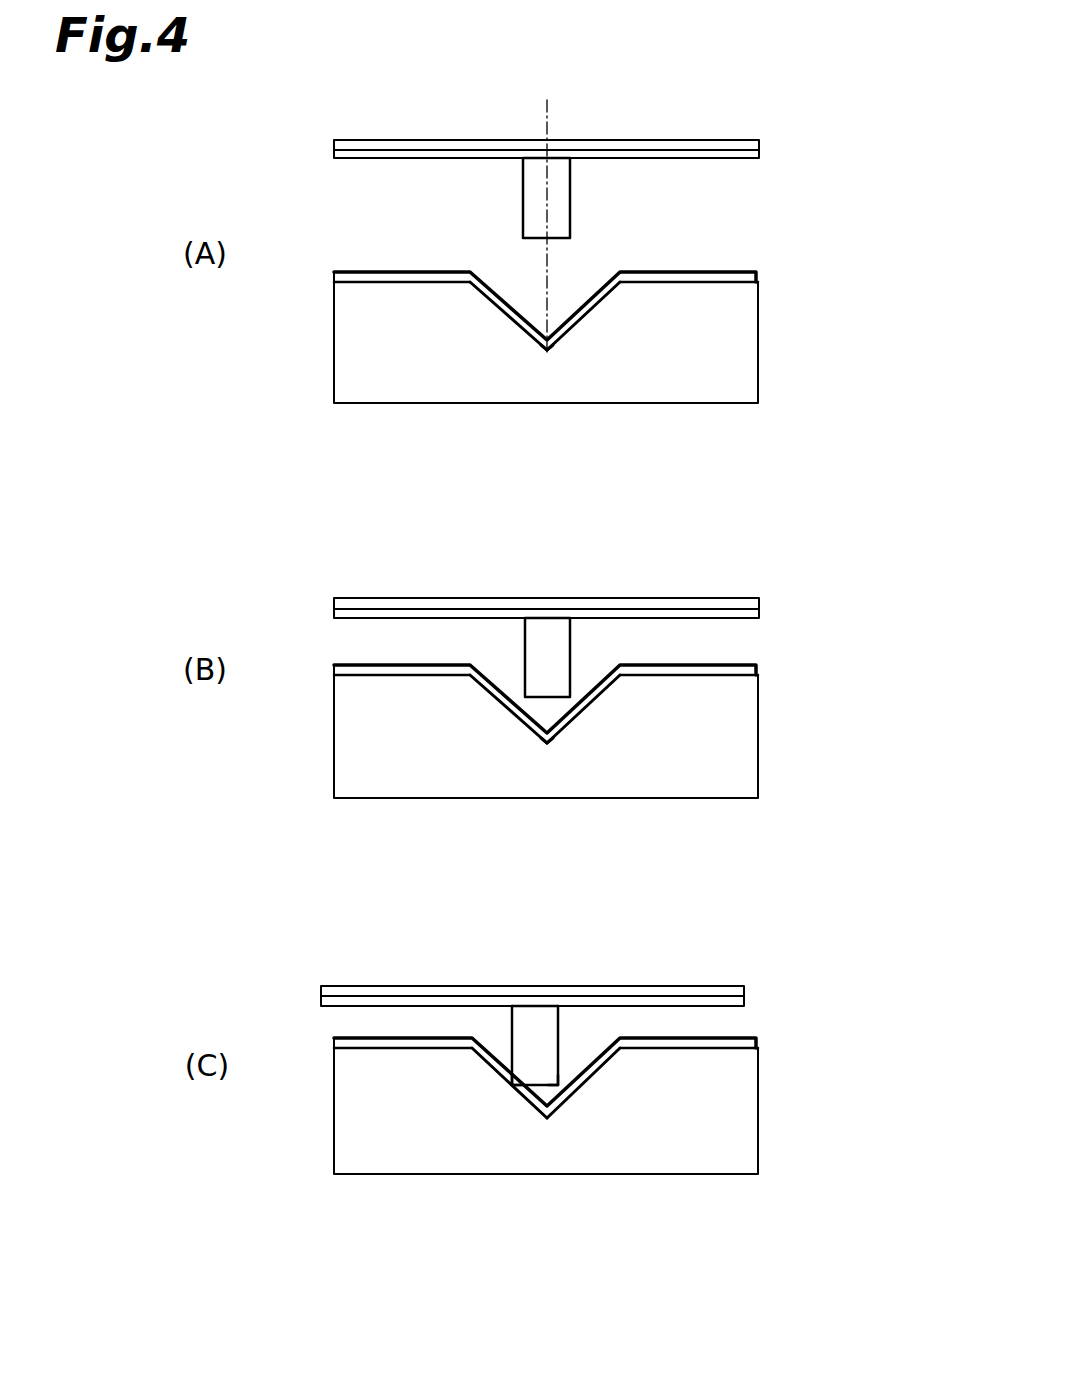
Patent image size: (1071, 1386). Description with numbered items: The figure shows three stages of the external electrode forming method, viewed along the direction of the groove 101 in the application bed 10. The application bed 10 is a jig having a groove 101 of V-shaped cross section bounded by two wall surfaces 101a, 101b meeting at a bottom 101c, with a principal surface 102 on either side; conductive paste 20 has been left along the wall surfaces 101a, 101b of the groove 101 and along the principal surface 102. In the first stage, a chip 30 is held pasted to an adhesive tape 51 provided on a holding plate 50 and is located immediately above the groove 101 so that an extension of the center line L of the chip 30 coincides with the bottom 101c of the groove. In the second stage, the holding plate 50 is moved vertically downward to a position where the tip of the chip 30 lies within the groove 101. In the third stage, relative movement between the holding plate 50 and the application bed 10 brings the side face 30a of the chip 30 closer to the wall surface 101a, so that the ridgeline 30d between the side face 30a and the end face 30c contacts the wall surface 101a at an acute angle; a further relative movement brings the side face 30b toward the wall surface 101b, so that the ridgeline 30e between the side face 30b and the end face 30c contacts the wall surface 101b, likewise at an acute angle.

The application bed 10 is at (592, 695).
The groove 101 is at (561, 676).
The wall surface 101a is at (494, 292).
The wall surface 101b is at (577, 308).
The bottom of the groove 101c is at (547, 351).
The principal surface 102 is at (723, 271).
The conductive paste 20 is at (520, 327).
The chip 30 is at (531, 686).
The side face 30a is at (512, 1027).
The side face 30b is at (562, 1023).
The end face 30c is at (547, 1120).
The ridgeline 30d is at (510, 1083).
The ridgeline 30e is at (560, 1105).
The holding plate 50 is at (759, 143).
The adhesive tape 51 is at (759, 153).
The center line L is at (549, 119).